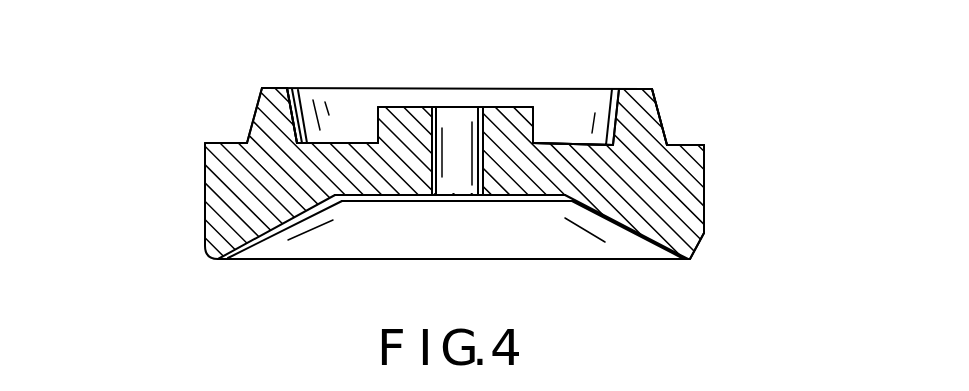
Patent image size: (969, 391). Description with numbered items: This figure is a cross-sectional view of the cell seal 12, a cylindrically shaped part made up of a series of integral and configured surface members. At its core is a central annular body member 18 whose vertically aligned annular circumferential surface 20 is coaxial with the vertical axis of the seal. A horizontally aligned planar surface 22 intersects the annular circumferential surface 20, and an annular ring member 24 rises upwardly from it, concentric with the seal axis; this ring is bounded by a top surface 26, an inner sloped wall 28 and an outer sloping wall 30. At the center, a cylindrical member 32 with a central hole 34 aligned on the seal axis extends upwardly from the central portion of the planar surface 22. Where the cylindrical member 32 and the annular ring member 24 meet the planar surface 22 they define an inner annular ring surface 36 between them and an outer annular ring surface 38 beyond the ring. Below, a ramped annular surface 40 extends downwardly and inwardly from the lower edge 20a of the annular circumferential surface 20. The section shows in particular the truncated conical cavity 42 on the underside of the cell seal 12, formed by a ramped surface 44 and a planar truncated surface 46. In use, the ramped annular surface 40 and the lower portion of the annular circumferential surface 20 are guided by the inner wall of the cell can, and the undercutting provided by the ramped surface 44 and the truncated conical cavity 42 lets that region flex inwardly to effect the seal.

The cell seal 12 is at (203, 191).
The central annular body member 18 is at (713, 163).
The annular circumferential surface 20 is at (705, 193).
The lower edge of the annular circumferential surface 20a is at (705, 232).
The horizontally aligned planar surface 22 is at (230, 142).
The annular ring member 24 is at (648, 117).
The top surface 26 is at (637, 88).
The inner sloped wall 28 is at (300, 95).
The outer sloping wall 30 is at (258, 101).
The cylindrical member 32 is at (523, 107).
The central hole 34 is at (457, 120).
The inner annular ring surface 36 is at (550, 143).
The outer annular ring surface 38 is at (696, 144).
The ramped annular surface 40 is at (700, 242).
The truncated conical cavity 42 is at (527, 237).
The ramped surface 44 is at (290, 223).
The planar truncated surface 46 is at (402, 203).